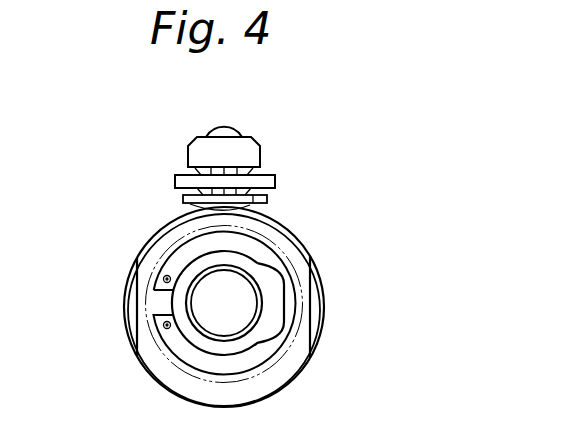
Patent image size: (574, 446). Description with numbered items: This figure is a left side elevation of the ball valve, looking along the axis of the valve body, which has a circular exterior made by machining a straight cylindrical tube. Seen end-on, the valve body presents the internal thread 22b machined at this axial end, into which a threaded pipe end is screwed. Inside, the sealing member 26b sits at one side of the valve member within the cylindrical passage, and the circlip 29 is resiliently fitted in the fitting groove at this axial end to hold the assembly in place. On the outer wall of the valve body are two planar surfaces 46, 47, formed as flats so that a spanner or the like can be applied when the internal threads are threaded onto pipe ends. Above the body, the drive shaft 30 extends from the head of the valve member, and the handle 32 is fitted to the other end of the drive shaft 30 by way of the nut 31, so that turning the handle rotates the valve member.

The drive shaft 30 is at (225, 131).
The nut 31 is at (208, 153).
The handle 32 is at (265, 180).
The internal thread 22b is at (180, 246).
The sealing member 26b is at (248, 265).
The circlip 29 is at (258, 353).
The planar surface 47 is at (310, 306).
The planar surface 46 is at (138, 320).